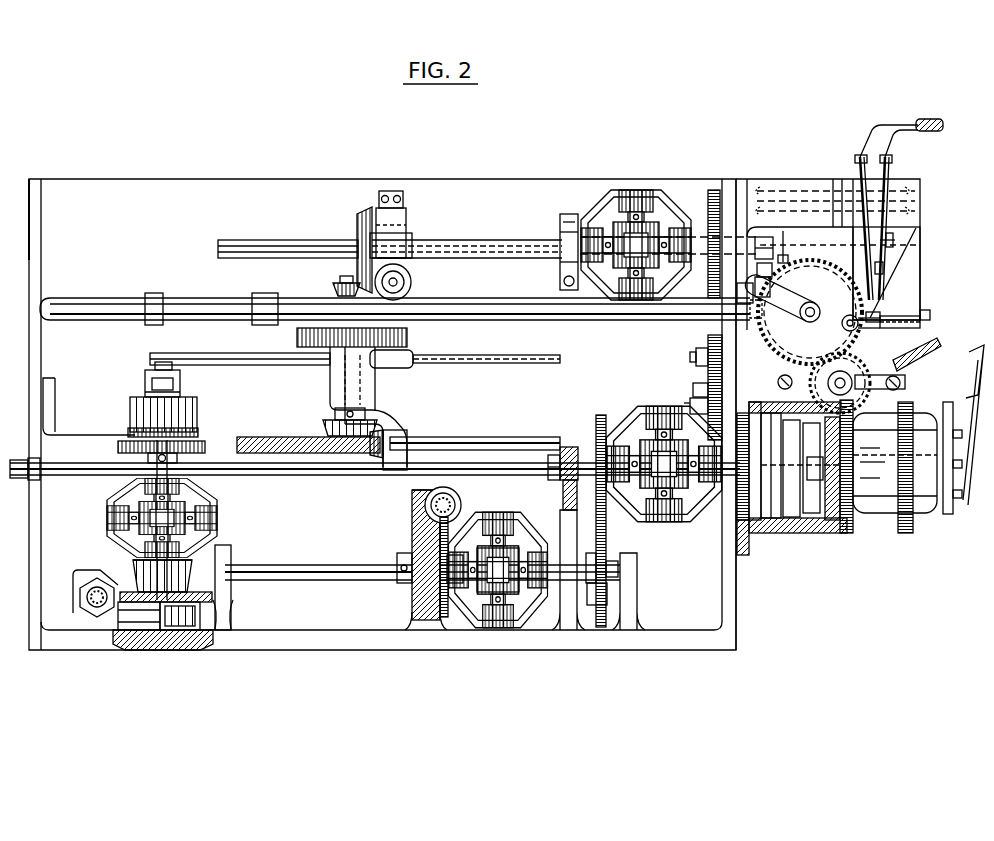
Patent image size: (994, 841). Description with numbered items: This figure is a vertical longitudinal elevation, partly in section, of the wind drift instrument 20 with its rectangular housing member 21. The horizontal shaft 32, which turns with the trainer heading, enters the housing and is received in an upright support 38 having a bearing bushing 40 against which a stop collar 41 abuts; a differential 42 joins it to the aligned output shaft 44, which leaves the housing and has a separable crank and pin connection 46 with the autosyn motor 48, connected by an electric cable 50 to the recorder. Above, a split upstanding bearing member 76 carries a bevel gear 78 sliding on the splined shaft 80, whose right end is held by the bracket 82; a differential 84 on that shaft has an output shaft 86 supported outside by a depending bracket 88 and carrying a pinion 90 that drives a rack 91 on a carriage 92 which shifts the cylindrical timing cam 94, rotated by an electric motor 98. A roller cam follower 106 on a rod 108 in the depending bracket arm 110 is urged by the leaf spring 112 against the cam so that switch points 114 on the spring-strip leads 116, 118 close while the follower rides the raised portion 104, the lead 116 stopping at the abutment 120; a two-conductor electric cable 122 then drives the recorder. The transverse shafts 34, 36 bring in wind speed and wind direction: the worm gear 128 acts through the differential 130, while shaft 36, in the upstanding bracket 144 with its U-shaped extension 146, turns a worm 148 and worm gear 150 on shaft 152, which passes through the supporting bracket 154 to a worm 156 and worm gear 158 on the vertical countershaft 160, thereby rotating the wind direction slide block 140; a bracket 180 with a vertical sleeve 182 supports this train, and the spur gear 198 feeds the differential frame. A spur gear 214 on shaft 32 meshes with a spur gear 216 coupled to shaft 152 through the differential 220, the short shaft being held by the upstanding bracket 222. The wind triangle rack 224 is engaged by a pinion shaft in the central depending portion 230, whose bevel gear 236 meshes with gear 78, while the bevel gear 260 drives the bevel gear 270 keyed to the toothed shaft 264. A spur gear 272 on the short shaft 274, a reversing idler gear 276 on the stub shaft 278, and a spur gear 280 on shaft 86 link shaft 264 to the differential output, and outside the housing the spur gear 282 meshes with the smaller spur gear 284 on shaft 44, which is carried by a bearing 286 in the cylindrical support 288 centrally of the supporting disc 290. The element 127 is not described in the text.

The wind drift instrument 20 is at (28, 176).
The housing member 21 is at (114, 192).
The shaft 32 is at (85, 472).
The shaft 34 is at (108, 632).
The shaft 36 is at (446, 494).
The upright support 38 is at (552, 598).
The bearing bushing 40 is at (568, 446).
The stop collar 41 is at (552, 453).
The differential 42 is at (665, 533).
The output shaft 44 is at (737, 480).
The crank and pin connection 46 is at (810, 480).
The autosyn motor 48 is at (925, 520).
The electric cable 50 is at (968, 368).
The split upstanding bearing member 76 is at (386, 226).
The bevel gear 78 is at (362, 212).
The splined shaft 80 is at (270, 243).
The bracket 82 is at (565, 216).
The differential 84 is at (604, 190).
The output shaft 86 is at (738, 213).
The depending bracket 88 is at (803, 232).
The pinion 90 is at (760, 235).
The rack 91 is at (783, 230).
The carriage 92 is at (806, 280).
The cylindrical timing cam 94 is at (795, 335).
The electric motor 98 is at (906, 372).
The raised portion 104 is at (822, 305).
The roller cam follower 106 is at (853, 327).
The rod 108 is at (930, 315).
The depending bracket arm 110 is at (910, 232).
The leaf spring 112 is at (846, 244).
The switch points 114 is at (885, 293).
The spring-strip lead 116 is at (897, 262).
The spring-strip lead 118 is at (893, 242).
The abutment 120 is at (892, 326).
The two-conductor electric cable 122 is at (922, 127).
The nut 127 is at (76, 620).
The worm gear 128 is at (212, 605).
The differential 130 is at (222, 525).
The wind direction slide block 140 is at (138, 378).
The upstanding bracket 144 is at (420, 625).
The U-shaped extension 146 is at (407, 465).
The worm 148 is at (461, 506).
The worm gear 150 is at (441, 630).
The shaft 152 is at (300, 583).
The supporting bracket 154 is at (226, 610).
The worm 156 is at (192, 605).
The worm gear 158 is at (140, 632).
The countershaft 160 is at (175, 512).
The bracket 180 is at (95, 432).
The vertical sleeve 182 is at (176, 410).
The spur gear 198 is at (180, 632).
The spur gear 214 is at (600, 440).
The spur gear 216 is at (604, 606).
The differential 220 is at (481, 632).
The upstanding bracket 222 is at (630, 605).
The wind triangle rack 224 is at (240, 356).
The central depending portion 230 is at (332, 378).
The bevel gear 236 is at (333, 286).
The bevel gear 260 is at (326, 428).
The toothed shaft 264 is at (500, 437).
The bevel gear 270 is at (372, 458).
The spur gear 272 is at (708, 390).
The short shaft 274 is at (692, 406).
The reversing idler gear 276 is at (695, 358).
The stub shaft 278 is at (712, 372).
The spur gear 280 is at (708, 208).
The spur gear 282 is at (752, 370).
The spur gear 284 is at (748, 540).
The bearing 286 is at (772, 537).
The cylindrical support 288 is at (835, 528).
The supporting disc 290 is at (792, 537).